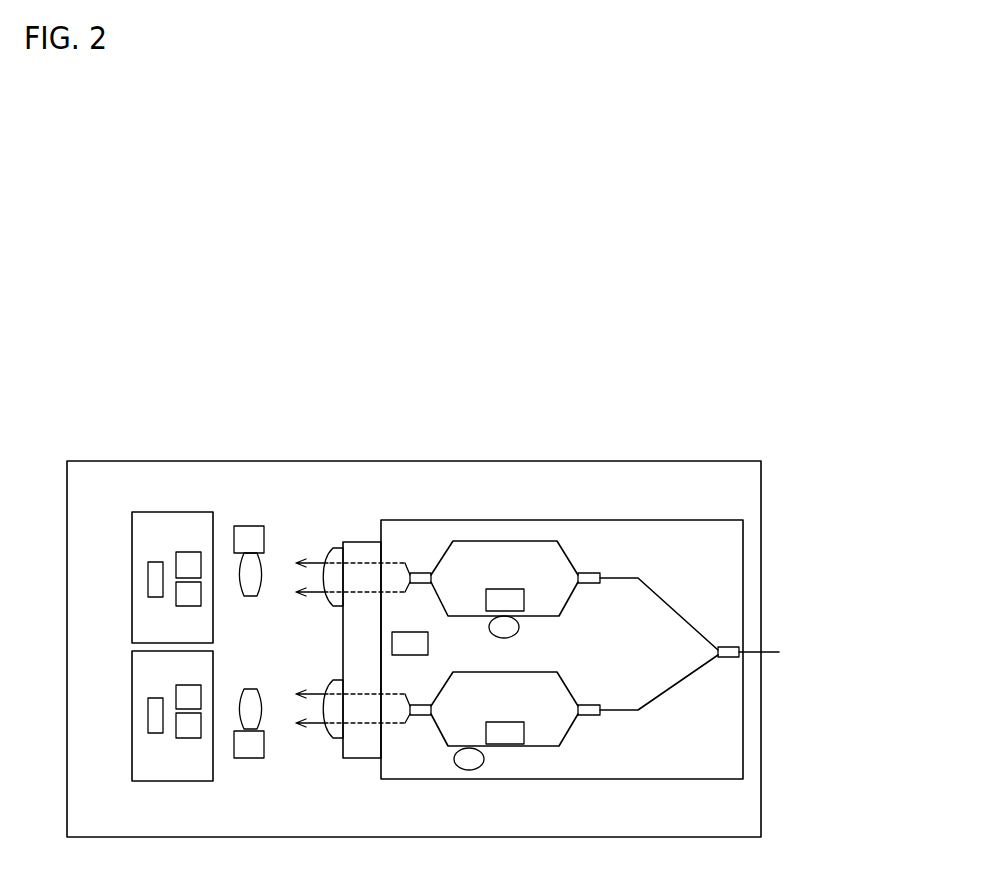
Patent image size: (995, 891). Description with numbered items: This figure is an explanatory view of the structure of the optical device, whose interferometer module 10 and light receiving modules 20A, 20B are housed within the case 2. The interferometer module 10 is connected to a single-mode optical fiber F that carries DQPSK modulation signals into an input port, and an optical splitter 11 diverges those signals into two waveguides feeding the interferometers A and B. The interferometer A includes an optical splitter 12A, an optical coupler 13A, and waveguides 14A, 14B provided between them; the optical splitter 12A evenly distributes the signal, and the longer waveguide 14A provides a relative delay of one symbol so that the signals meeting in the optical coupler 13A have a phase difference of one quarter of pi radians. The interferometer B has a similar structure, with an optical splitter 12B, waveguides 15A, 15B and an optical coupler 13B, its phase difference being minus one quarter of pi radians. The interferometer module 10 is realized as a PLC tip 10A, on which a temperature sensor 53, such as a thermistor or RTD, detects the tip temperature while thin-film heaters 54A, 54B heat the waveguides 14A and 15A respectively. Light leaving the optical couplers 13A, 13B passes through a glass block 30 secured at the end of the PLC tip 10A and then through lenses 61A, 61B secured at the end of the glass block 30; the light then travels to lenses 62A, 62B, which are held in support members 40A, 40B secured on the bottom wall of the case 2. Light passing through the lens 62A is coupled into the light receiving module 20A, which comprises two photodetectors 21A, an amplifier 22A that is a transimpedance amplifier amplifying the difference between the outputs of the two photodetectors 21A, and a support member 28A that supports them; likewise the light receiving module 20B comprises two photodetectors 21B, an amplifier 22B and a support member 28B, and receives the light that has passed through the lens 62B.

The case 2 is at (292, 461).
The interferometer module 10 is at (562, 670).
The PLC tip 10A is at (399, 779).
The optical splitter 11 is at (731, 647).
The optical splitter 12A is at (593, 704).
The optical coupler 12B is at (596, 574).
The optical coupler 13A is at (418, 716).
The optical coupler 13B is at (420, 584).
The waveguide 14A is at (565, 739).
The waveguide 14B is at (491, 672).
The waveguide 15A is at (539, 617).
The waveguide 15B is at (440, 553).
The light receiving module 20A is at (143, 716).
The light receiving module 20B is at (144, 573).
The photo detectors 21A is at (176, 697).
The photo detectors 21B is at (175, 577).
The amplifier 22A is at (150, 727).
The amplifier 22B is at (150, 585).
The support member 28A is at (138, 672).
The support member 28B is at (150, 540).
The glass block 30 is at (362, 750).
The support member 40A is at (248, 757).
The support member 40B is at (257, 527).
The temperature sensor 53 is at (428, 644).
The heater 54A is at (494, 722).
The heater 54B is at (500, 589).
The lens 61A is at (328, 738).
The lens 61B is at (327, 600).
The lens 62A is at (250, 702).
The lens 62B is at (253, 596).
The interferometer A is at (532, 706).
The interferometer B is at (516, 589).
The optical fiber F is at (777, 648).